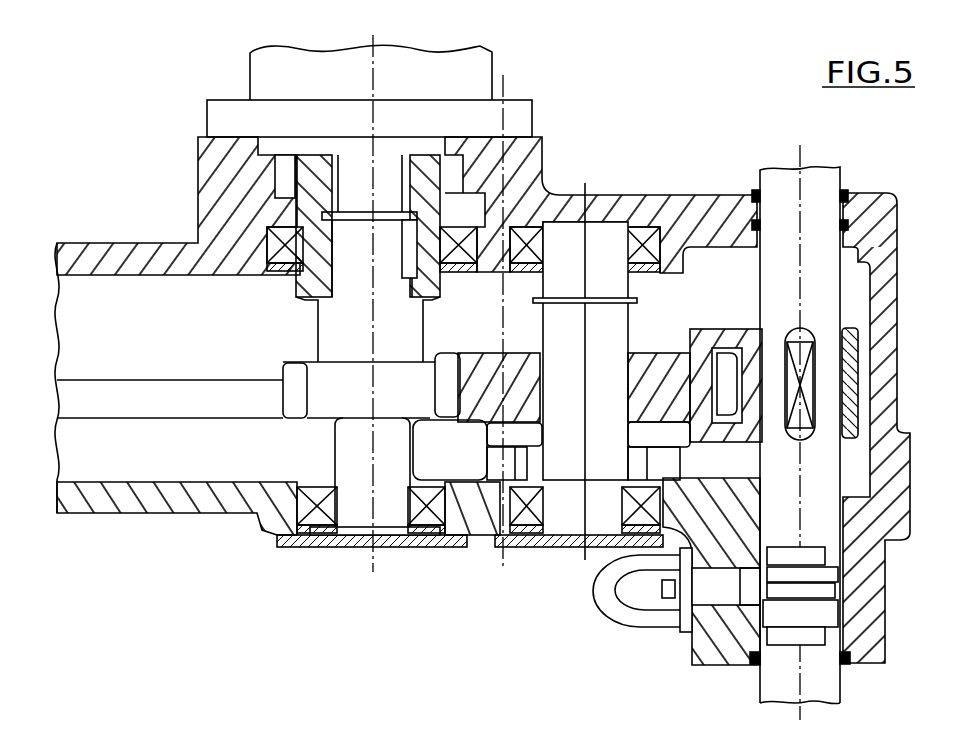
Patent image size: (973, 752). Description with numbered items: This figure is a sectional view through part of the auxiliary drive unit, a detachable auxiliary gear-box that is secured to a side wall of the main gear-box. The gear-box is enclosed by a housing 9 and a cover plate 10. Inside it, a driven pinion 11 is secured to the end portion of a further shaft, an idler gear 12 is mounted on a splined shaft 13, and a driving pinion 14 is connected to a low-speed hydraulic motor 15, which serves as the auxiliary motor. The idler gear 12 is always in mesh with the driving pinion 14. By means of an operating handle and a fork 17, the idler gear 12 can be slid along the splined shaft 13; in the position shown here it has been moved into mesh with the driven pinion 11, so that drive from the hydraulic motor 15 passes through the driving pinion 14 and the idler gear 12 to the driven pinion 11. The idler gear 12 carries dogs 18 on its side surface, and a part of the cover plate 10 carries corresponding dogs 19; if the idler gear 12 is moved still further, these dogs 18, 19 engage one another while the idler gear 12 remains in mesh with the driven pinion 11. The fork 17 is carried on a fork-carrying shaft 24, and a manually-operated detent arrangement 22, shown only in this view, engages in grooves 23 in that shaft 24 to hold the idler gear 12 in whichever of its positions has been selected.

The housing 9 is at (893, 222).
The cover plate 10 is at (163, 505).
The driven pinion 11 is at (180, 403).
The idler gear 12 is at (650, 365).
The splined shaft 13 is at (597, 283).
The driving pinion 14 is at (330, 385).
The low-speed hydraulic motor 15 is at (478, 68).
The fork 17 is at (720, 333).
The dogs 18 is at (670, 440).
The dogs 19 is at (500, 468).
The detent arrangement 22 is at (600, 619).
The grooves 23 is at (835, 637).
The fork-carrying shaft 24 is at (816, 240).